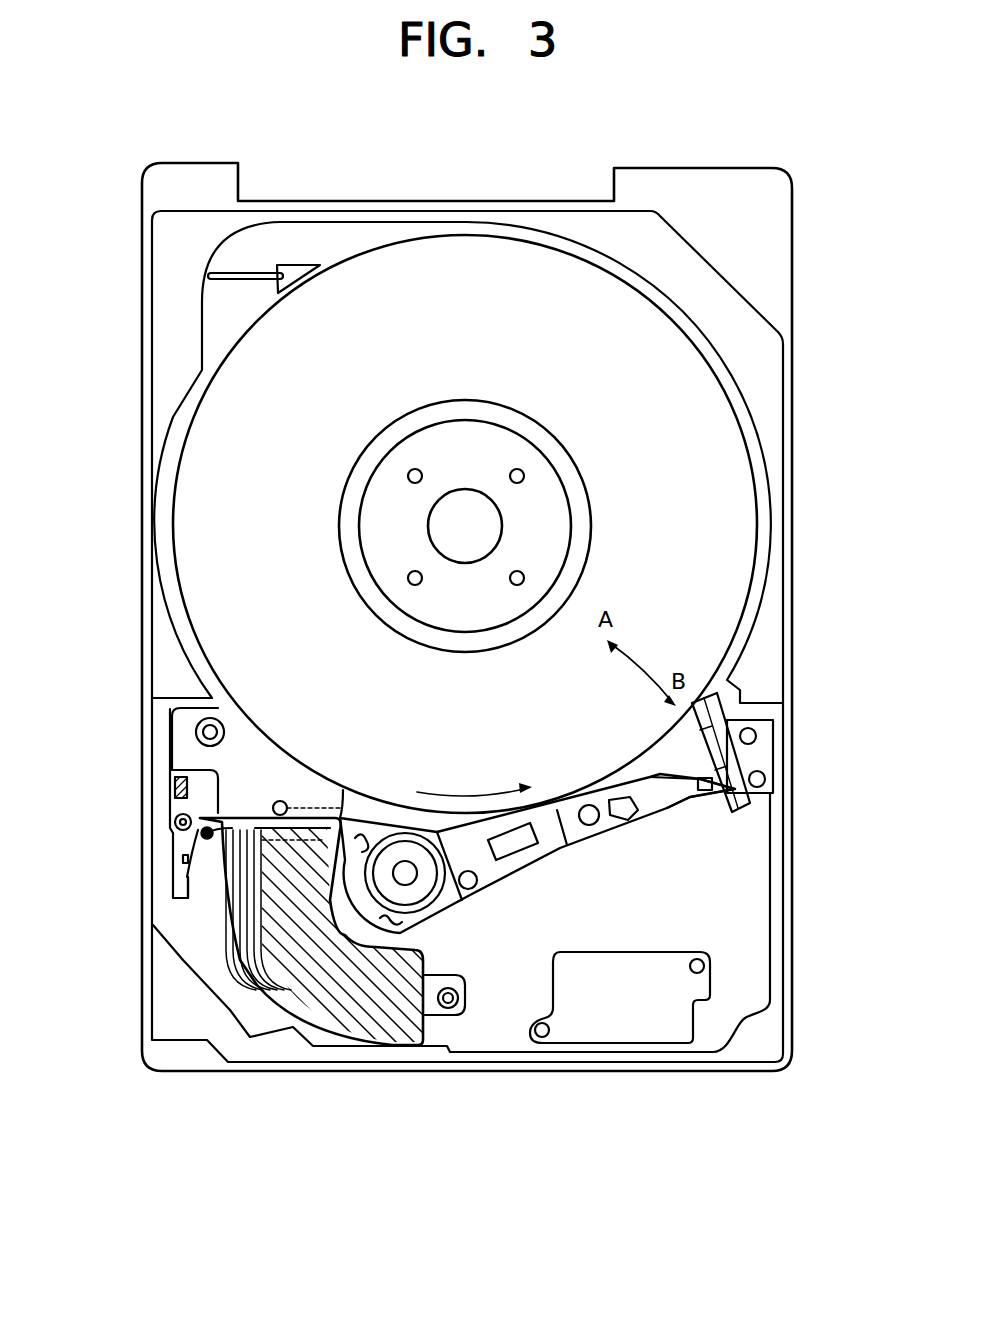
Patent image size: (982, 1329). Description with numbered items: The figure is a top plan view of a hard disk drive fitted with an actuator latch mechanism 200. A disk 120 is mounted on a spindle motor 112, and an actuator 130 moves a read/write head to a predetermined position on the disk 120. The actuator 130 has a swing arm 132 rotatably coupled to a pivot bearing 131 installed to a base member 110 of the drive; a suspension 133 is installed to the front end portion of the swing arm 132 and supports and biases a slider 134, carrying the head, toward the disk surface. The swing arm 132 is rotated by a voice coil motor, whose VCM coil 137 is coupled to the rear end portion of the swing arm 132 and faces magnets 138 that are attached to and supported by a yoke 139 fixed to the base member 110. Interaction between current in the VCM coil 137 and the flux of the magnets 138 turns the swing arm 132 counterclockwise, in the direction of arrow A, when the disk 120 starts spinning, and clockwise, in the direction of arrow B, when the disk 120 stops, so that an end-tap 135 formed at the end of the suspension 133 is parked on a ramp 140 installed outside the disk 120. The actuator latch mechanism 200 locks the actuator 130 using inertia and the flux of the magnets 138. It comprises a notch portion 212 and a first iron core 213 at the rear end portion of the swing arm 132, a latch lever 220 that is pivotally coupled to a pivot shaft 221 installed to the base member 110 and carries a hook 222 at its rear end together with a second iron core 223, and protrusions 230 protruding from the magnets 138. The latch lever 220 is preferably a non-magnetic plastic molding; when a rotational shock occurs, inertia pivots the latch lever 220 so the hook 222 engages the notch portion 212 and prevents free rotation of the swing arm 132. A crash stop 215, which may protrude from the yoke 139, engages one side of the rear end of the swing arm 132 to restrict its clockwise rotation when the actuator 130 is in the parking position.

The base member 110 is at (150, 615).
The spindle motor 112 is at (497, 450).
The disk 120 is at (738, 493).
The actuator 130 is at (543, 882).
The pivot bearing 131 is at (410, 877).
The swing arm 132 is at (522, 856).
The suspension 133 is at (677, 795).
The slider 134 is at (703, 790).
The end-tap 135 is at (727, 779).
The VCM coil 137 is at (257, 985).
The magnets 138 is at (380, 1033).
The yoke 139 is at (421, 1040).
The ramp 140 is at (722, 729).
The actuator latch mechanism 200 is at (251, 809).
The notch portion 212 is at (287, 805).
The first iron core 213 is at (257, 813).
The crash stop 215 is at (285, 820).
The latch lever 220 is at (172, 785).
The pivot shaft 221 is at (174, 822).
The hook 222 is at (183, 885).
The second iron core 223 is at (168, 752).
The protrusions 230 is at (233, 813).